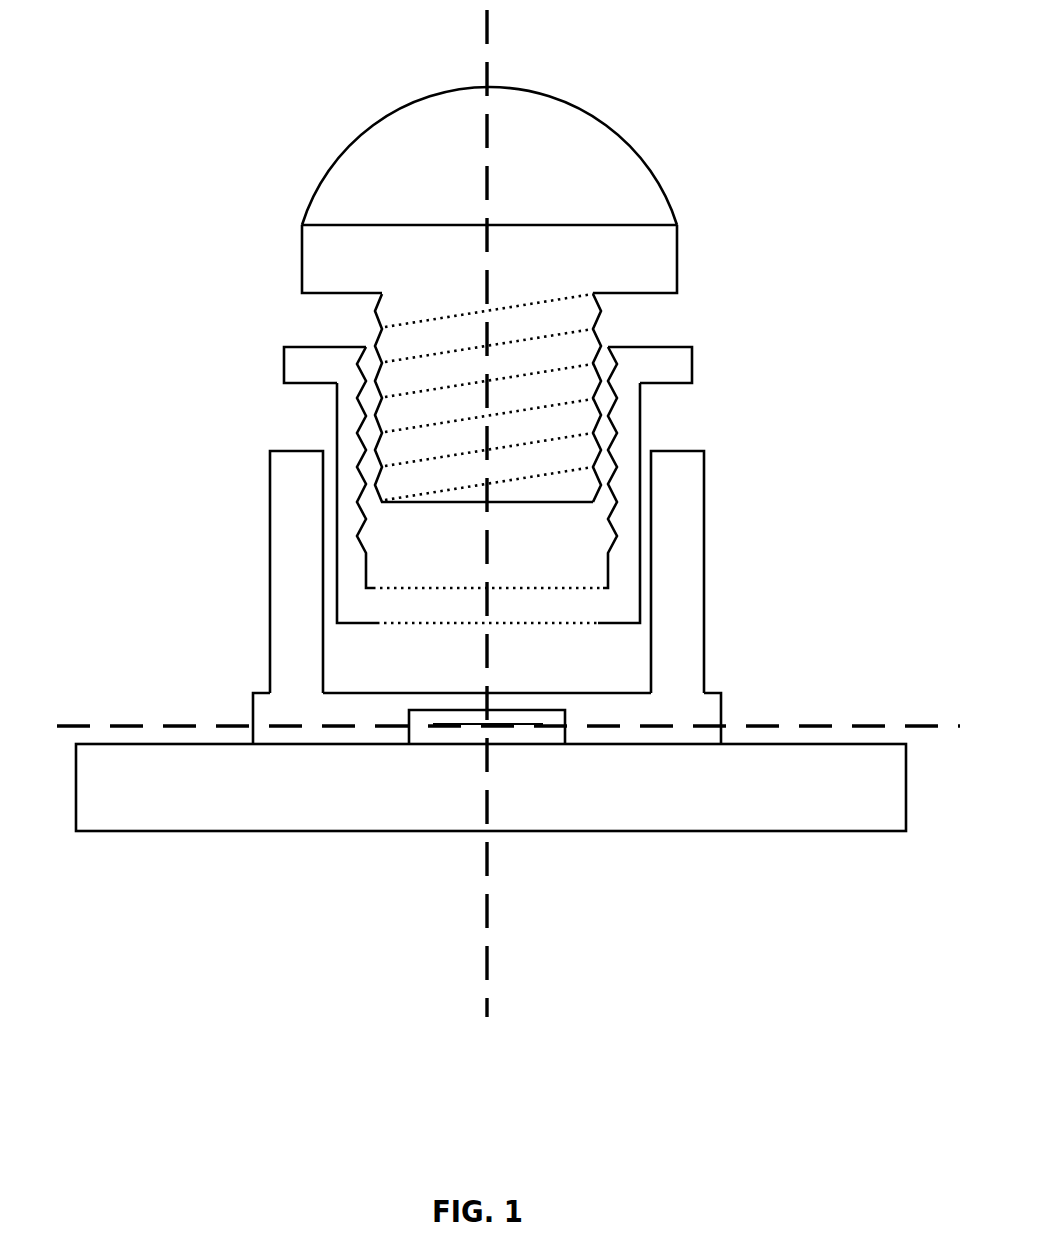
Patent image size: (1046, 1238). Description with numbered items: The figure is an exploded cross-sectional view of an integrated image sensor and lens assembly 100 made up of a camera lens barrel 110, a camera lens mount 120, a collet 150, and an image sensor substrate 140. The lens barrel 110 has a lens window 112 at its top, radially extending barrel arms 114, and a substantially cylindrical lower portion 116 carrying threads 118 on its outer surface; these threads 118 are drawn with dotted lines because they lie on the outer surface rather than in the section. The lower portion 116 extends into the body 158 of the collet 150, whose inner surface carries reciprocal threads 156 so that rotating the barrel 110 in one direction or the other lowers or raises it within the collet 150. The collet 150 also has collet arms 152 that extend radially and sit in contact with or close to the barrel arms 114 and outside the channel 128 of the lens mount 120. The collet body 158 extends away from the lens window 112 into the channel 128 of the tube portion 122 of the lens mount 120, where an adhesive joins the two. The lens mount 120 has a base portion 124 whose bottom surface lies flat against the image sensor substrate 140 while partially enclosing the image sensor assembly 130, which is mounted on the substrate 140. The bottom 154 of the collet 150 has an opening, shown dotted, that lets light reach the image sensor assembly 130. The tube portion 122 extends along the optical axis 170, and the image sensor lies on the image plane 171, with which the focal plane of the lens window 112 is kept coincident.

The integrated image sensor and lens assembly 100 is at (118, 28).
The camera lens barrel 110 is at (454, 276).
The lens window 112 is at (594, 101).
The barrel arms 114 is at (311, 257).
The lower portion 116 is at (406, 327).
The threads 118 is at (603, 342).
The camera lens mount 120 is at (485, 586).
The tube portion 122 is at (269, 482).
The base portion 124 is at (726, 689).
The channel of the tube portion 128 is at (337, 665).
The image sensor assembly 130 is at (567, 733).
The image sensor substrate 140 is at (299, 832).
The collet 150 is at (470, 460).
The collet arms 152 is at (321, 353).
The bottom of the collet 154 is at (581, 606).
The threads 156 is at (621, 429).
The body of the collet 158 is at (349, 534).
The optical axis 170 is at (580, 1050).
The image plane 171 is at (787, 729).